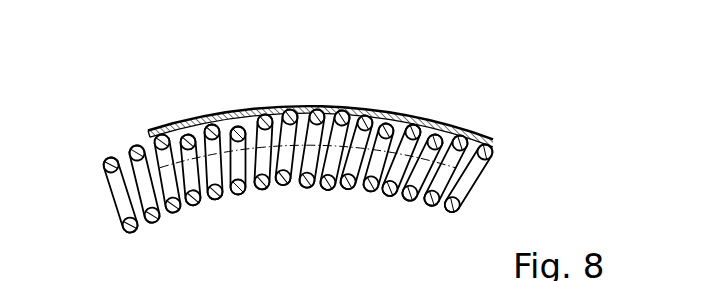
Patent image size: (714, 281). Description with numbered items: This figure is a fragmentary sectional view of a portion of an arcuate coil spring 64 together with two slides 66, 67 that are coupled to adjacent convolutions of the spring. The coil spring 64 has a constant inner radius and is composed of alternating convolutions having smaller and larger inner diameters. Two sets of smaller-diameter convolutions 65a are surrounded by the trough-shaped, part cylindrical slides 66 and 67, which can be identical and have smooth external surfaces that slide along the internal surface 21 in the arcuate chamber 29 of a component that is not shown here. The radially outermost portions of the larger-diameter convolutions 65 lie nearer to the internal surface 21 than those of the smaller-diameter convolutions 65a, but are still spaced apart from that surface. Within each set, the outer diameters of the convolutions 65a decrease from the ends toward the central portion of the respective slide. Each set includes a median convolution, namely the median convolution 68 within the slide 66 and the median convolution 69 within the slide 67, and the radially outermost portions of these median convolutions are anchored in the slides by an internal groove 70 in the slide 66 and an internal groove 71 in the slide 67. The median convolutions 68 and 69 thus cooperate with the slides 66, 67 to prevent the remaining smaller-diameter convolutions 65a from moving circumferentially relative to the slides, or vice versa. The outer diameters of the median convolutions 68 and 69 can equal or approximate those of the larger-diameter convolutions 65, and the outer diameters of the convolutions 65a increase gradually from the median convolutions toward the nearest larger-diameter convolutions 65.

The arcuate coil spring 64 is at (317, 137).
The larger-diameter convolutions 65 is at (107, 160).
The smaller-diameter convolutions 65a is at (350, 190).
The slide 66 is at (249, 108).
The internal surface 21 is at (353, 110).
The arcuate chamber 29 is at (277, 110).
The internal groove 70 is at (182, 123).
The internal groove 71 is at (417, 132).
The slide 67 is at (450, 133).
The median convolution 68 is at (218, 193).
The median convolution 69 is at (392, 197).